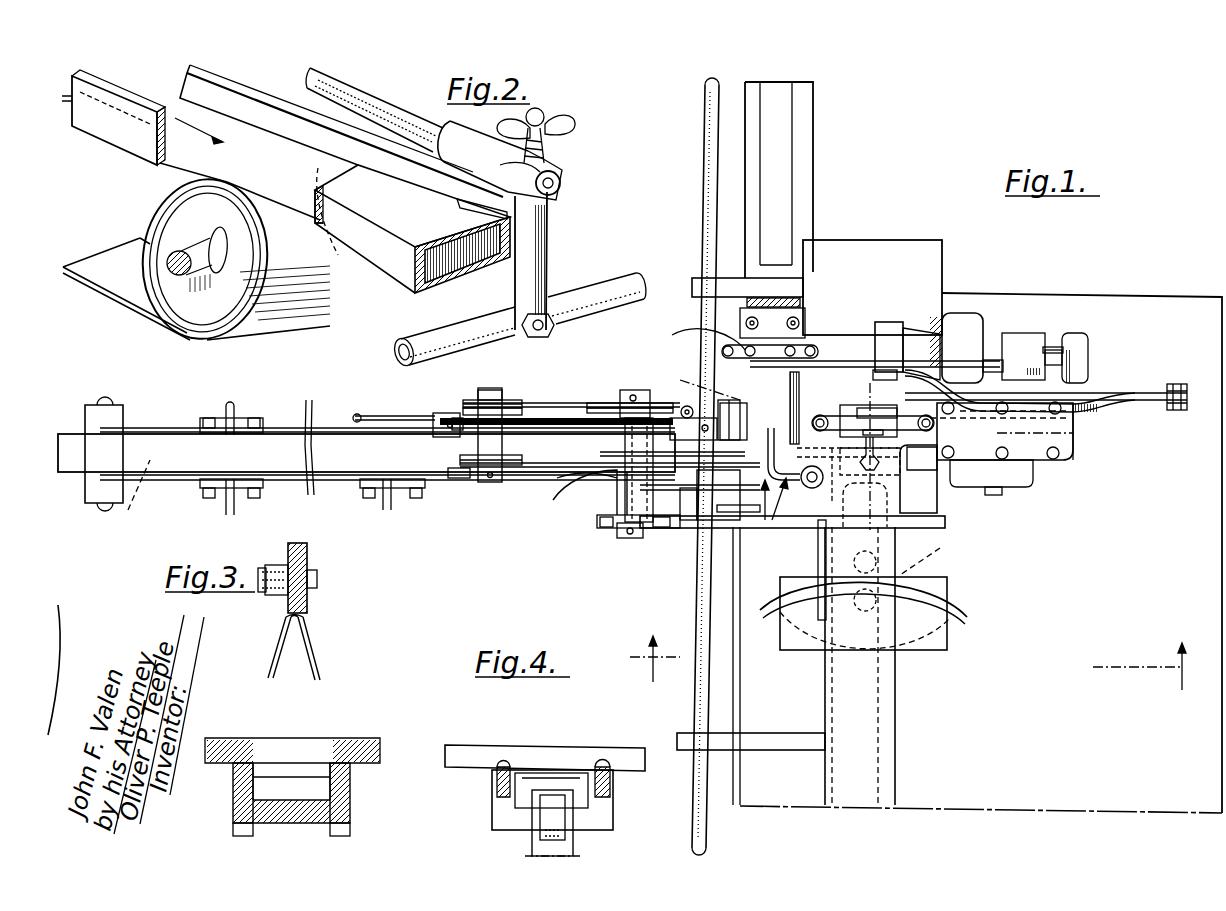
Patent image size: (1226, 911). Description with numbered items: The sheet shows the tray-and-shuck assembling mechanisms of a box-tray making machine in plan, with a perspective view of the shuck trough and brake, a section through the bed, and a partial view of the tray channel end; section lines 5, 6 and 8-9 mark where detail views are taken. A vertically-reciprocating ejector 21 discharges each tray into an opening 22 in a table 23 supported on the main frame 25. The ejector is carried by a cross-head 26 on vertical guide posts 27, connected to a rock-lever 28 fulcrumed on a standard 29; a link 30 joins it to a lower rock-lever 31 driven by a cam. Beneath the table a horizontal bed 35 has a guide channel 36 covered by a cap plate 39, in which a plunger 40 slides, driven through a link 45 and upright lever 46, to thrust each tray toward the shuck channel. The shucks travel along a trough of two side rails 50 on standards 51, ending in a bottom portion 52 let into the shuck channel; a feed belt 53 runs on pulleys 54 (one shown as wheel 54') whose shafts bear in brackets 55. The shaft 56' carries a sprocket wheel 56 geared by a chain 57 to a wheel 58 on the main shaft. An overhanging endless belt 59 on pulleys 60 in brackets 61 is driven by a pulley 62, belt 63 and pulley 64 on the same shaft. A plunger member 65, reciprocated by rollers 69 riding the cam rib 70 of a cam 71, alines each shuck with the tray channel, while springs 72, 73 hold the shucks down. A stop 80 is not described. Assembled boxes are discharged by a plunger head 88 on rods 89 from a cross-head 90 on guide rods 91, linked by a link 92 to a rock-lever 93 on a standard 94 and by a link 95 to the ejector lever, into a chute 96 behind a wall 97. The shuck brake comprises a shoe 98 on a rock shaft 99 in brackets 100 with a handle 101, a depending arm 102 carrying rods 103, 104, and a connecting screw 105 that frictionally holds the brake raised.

In FIG. 1, the section line 5- 5 is at (913, 530).
In FIG. 2, the section line 6- 6 is at (370, 207).
In FIG. 1, the section line 8-9 is at (1095, 433).
In FIG. 1, the ejector 21 is at (864, 458).
In FIG. 3, the ejector 21 is at (322, 662).
In FIG. 1, the opening 22 is at (896, 472).
In FIG. 3, the opening 22 is at (322, 755).
In FIG. 1, the table 23 is at (880, 238).
In FIG. 3, the table 23 is at (378, 740).
In FIG. 4, the table 23 is at (500, 745).
In FIG. 1, the main frame 25 is at (1192, 293).
In FIG. 1, the cross-head 26 is at (820, 415).
In FIG. 3, the cross-head 26 is at (308, 553).
In FIG. 1, the guide posts 27 is at (960, 418).
In FIG. 1, the rock-lever 28 is at (1142, 392).
In FIG. 3, the rock-lever 28 is at (310, 598).
In FIG. 1, the standard 29 is at (1065, 345).
In FIG. 1, the link 30 is at (1178, 412).
In FIG. 1, the lower rock-lever 31 is at (1095, 405).
In FIG. 1, the horizontal bed 35 is at (1073, 460).
In FIG. 4, the horizontal bed 35 is at (615, 828).
In FIG. 3, the guide channel 36 is at (352, 800).
In FIG. 1, the cap plate 39 is at (1037, 458).
In FIG. 4, the cap plate 39 is at (530, 745).
In FIG. 4, the plunger 40 is at (560, 775).
In FIG. 4, the link 45 is at (570, 805).
In FIG. 4, the upright lever 46 is at (530, 850).
In FIG. 2, the side rails 50 is at (105, 130).
In FIG. 1, the side rails 50 is at (135, 426).
In FIG. 1, the standards 51 is at (226, 500).
In FIG. 2, the bottom portion 52 is at (470, 286).
In FIG. 2, the feed belt 53 is at (197, 113).
In FIG. 1, the feed belt 53 is at (366, 453).
In FIG. 2, the pulleys 54 is at (232, 264).
In FIG. 1, the pulleys 54 is at (134, 494).
In FIG. 1, the wheel 54' is at (572, 503).
In FIG. 1, the brackets 55 is at (92, 504).
In FIG. 1, the sprocket wheel 56 is at (626, 536).
In FIG. 2, the shaft 56' is at (198, 247).
In FIG. 1, the shaft 56' is at (627, 545).
In FIG. 1, the chain 57 is at (652, 524).
In FIG. 1, the wheel 58 is at (818, 545).
In FIG. 1, the endless belt 59 is at (540, 478).
In FIG. 1, the pulleys 60 is at (687, 488).
In FIG. 1, the brackets 61 is at (480, 480).
In FIG. 1, the pulley 62 is at (505, 400).
In FIG. 1, the belt 63 is at (550, 403).
In FIG. 1, the pulley 64 is at (612, 403).
In FIG. 1, the plunger member 65 is at (740, 520).
In FIG. 1, the rollers 69 is at (906, 574).
In FIG. 1, the cam rib 70 is at (960, 610).
In FIG. 1, the cam 71 is at (948, 640).
In FIG. 1, the spring 72 is at (752, 545).
In FIG. 1, the spring 73 is at (690, 545).
In FIG. 1, the post 80 is at (740, 412).
In FIG. 1, the plunger head 88 is at (699, 336).
In FIG. 1, the rods 89 is at (770, 320).
In FIG. 1, the cross-head 90 is at (880, 364).
In FIG. 1, the guide rods 91 is at (812, 348).
In FIG. 1, the link 92 is at (720, 395).
In FIG. 1, the rock-lever 93 is at (888, 322).
In FIG. 1, the standard 94 is at (935, 330).
In FIG. 1, the link 95 is at (985, 360).
In FIG. 1, the chute 96 is at (814, 122).
In FIG. 1, the wall 97 is at (798, 322).
In FIG. 2, the shoe 98 is at (457, 208).
In FIG. 1, the shoe 98 is at (690, 442).
In FIG. 2, the rock shaft 99 is at (385, 97).
In FIG. 1, the rock shaft 99 is at (360, 422).
In FIG. 2, the brackets 100 is at (500, 160).
In FIG. 1, the brackets 100 is at (440, 438).
In FIG. 1, the handle 101 is at (353, 416).
In FIG. 2, the depending arm 102 is at (552, 241).
In FIG. 2, the rod 103 is at (395, 342).
In FIG. 1, the rod 103 is at (707, 843).
In FIG. 2, the rod 104 is at (643, 276).
In FIG. 1, the rod 104 is at (705, 112).
In FIG. 2, the connecting screw 105 is at (560, 118).
In FIG. 1, the connecting screw 105 is at (640, 442).